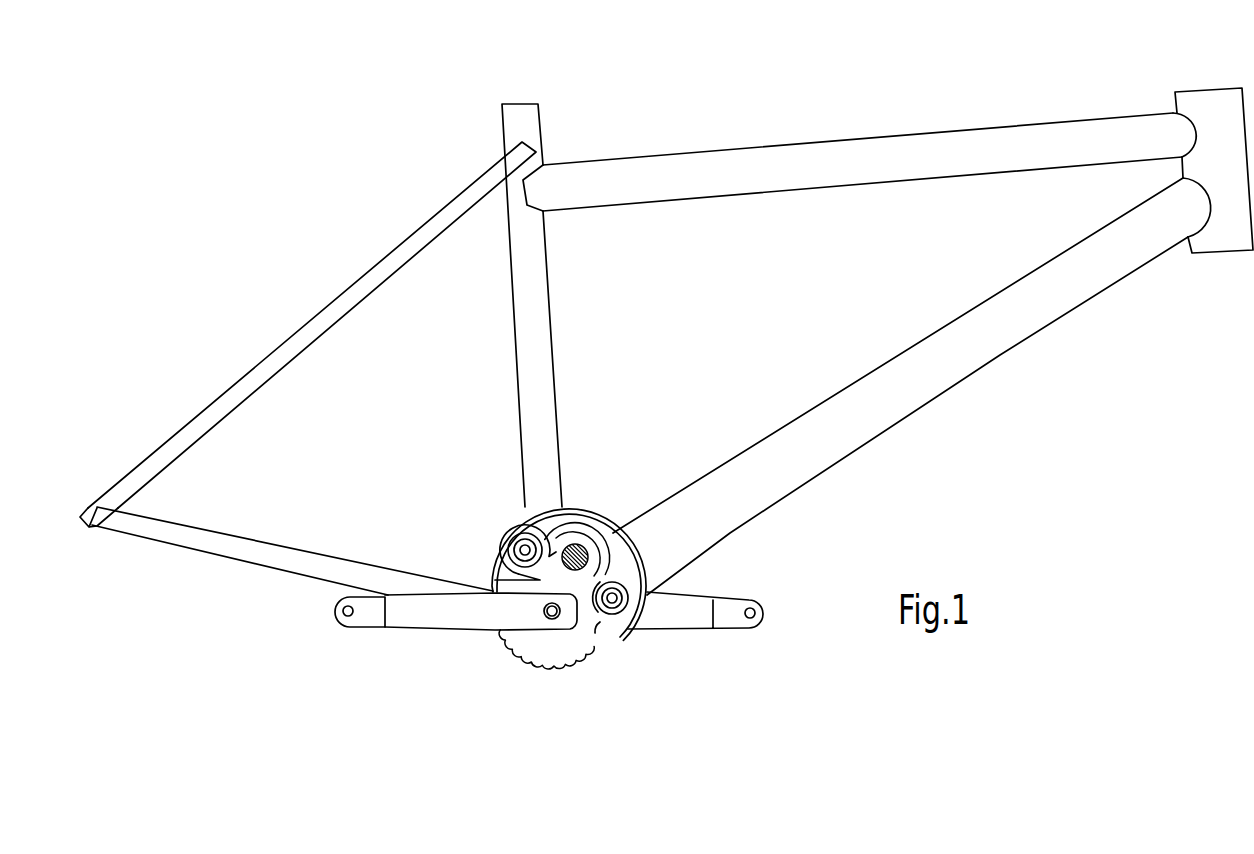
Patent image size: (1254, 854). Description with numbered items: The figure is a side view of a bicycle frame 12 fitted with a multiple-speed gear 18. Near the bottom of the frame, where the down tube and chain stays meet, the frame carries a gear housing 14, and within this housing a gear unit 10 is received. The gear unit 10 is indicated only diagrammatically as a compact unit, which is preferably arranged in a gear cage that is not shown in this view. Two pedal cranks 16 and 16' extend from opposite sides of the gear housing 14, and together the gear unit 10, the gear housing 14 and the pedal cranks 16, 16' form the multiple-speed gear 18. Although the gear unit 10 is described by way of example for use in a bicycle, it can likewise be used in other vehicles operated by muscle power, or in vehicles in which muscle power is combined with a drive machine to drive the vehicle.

The gear unit 10 is at (623, 633).
The bicycle frame 12 is at (848, 158).
The gear housing 14 is at (590, 518).
The pedal crank 16 is at (429, 656).
The pedal crank 16' is at (727, 651).
The multiple-speed gear 18 is at (468, 518).